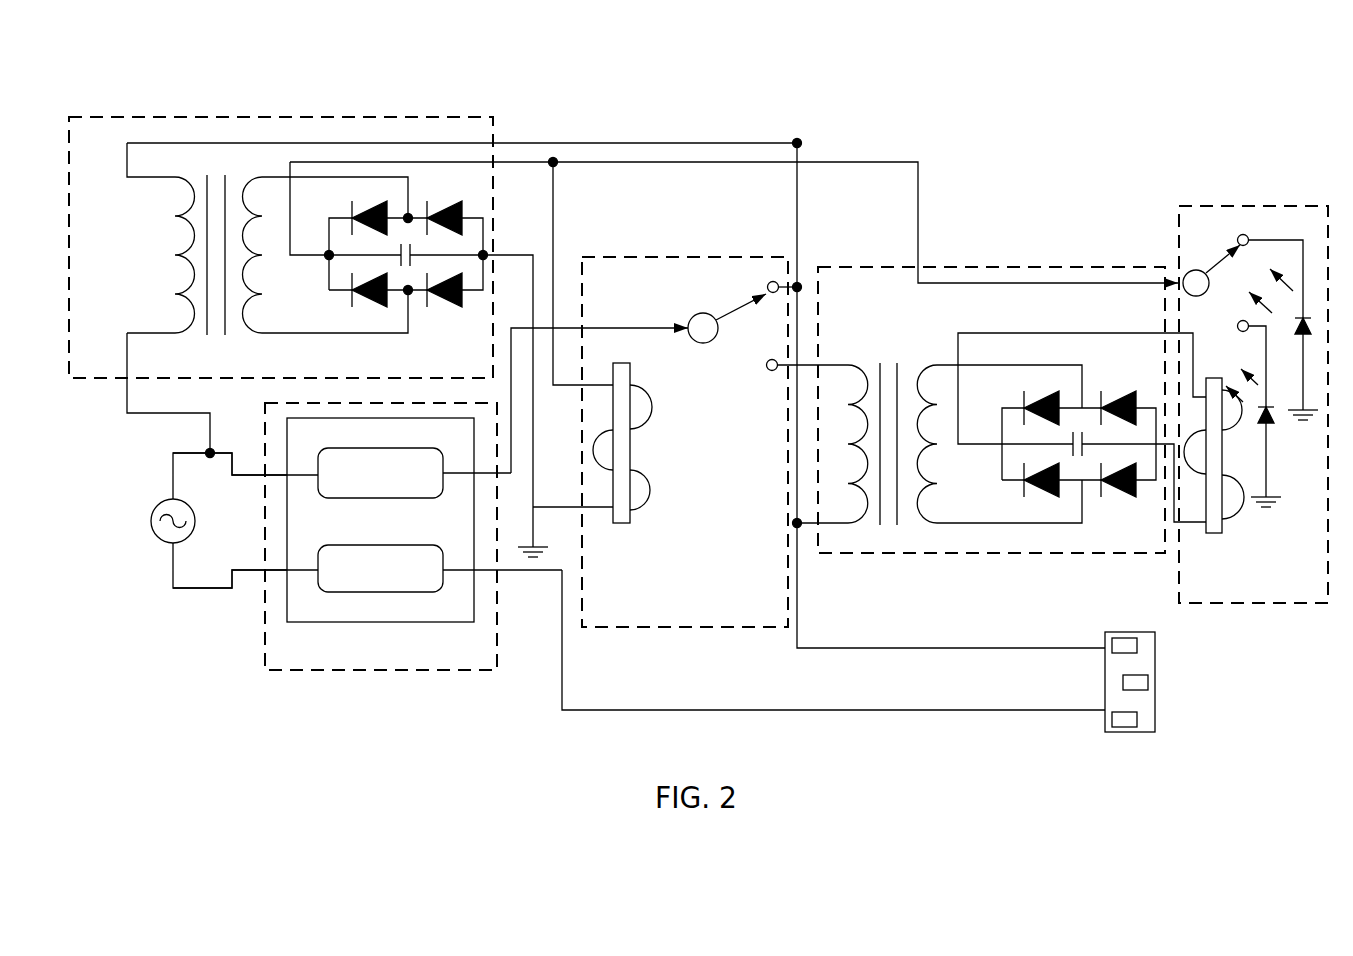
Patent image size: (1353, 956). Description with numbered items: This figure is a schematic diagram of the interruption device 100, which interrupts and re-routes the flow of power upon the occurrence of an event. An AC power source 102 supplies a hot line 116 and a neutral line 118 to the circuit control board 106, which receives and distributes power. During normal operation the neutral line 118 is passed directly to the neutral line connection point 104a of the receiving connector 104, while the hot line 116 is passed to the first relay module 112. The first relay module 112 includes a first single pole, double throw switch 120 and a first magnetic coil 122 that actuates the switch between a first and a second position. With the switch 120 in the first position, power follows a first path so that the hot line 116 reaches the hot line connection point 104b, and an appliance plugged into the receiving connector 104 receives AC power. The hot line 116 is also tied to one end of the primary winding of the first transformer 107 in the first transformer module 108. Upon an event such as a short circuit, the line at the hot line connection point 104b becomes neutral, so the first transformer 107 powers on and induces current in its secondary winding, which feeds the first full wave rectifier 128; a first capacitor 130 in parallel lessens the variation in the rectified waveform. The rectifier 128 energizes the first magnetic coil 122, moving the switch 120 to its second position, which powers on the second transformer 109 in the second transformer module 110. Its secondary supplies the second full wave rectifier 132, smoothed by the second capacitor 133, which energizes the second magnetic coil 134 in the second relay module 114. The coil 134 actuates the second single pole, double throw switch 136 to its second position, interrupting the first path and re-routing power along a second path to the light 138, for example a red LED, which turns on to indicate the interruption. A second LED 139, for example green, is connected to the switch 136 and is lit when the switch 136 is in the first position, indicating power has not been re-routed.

The interruption device 100 is at (317, 752).
The power source 102 is at (147, 557).
The receiving connector 104 is at (1125, 737).
The neutral line connection point 104a is at (1123, 722).
The hot line connection point 104b is at (1123, 647).
The circuit control board 106 is at (475, 602).
The first transformer 107 is at (157, 275).
The first transformer module 108 is at (485, 117).
The second transformer 109 is at (878, 357).
The second transformer module 110 is at (837, 267).
The first relay module 112 is at (720, 628).
The second relay module 114 is at (1245, 605).
The hot line 116 is at (195, 455).
The neutral line 118 is at (205, 590).
The first single pole, double throw switch 120 is at (710, 350).
The first magnetic coil 122 is at (628, 452).
The first full wave rectifier 128 is at (313, 266).
The first capacitor 130 is at (408, 266).
The second full wave rectifier 132 is at (1148, 355).
The second capacitor 133 is at (1078, 462).
The second magnetic coil 134 is at (1208, 533).
The second single pole, double throw switch 136 is at (1198, 257).
The light 138 is at (1273, 428).
The second LED 139 is at (1297, 345).